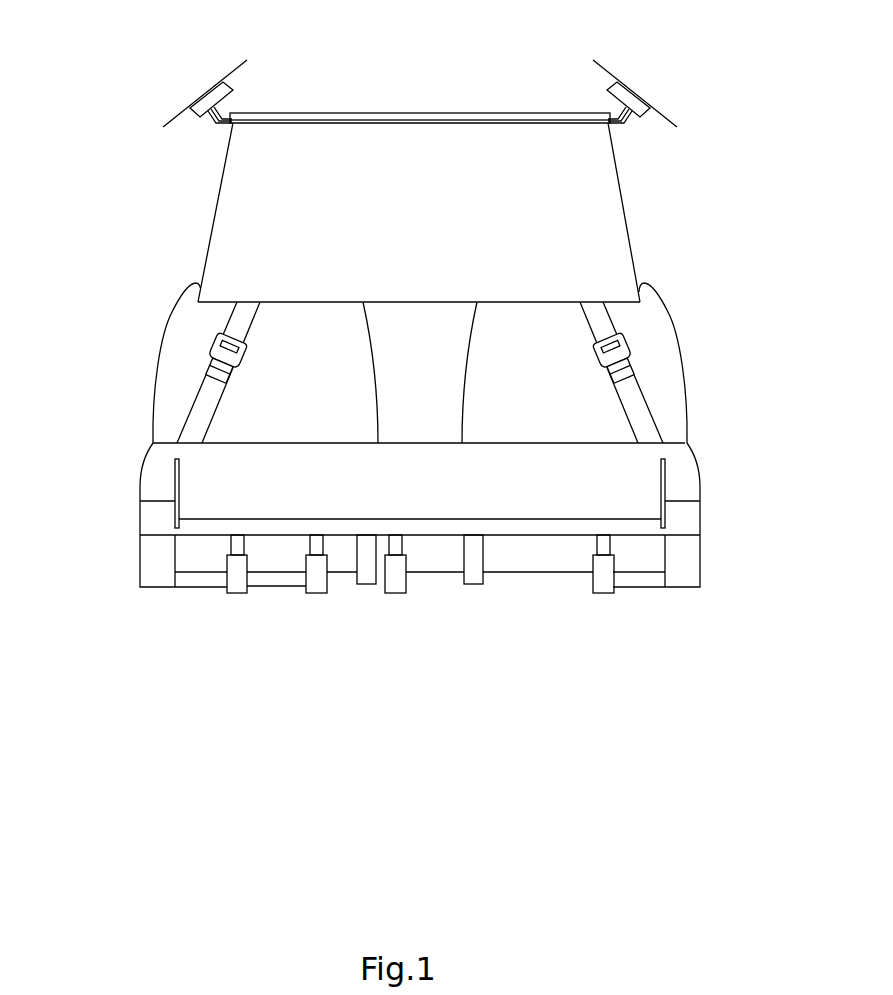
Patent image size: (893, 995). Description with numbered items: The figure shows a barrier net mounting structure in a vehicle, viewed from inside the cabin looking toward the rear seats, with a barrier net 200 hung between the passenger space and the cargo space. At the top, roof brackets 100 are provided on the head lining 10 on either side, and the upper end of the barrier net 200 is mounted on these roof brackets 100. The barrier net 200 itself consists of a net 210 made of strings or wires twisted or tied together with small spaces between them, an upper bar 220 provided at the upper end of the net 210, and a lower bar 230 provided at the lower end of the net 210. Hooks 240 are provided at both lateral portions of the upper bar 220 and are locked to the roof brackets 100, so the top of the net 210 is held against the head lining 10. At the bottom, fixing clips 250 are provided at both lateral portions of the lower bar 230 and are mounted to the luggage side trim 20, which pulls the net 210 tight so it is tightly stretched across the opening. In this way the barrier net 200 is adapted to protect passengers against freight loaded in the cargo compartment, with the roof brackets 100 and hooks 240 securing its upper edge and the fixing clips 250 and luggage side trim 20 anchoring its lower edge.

The head lining 10 is at (237, 67).
The luggage side trim 20 is at (147, 467).
The roof bracket 100 is at (255, 88).
The barrier net 200 is at (371, 182).
The net 210 is at (233, 218).
The upper bar 220 is at (393, 112).
The lower bar 230 is at (217, 312).
The hook 240 is at (218, 123).
The fixing clip 250 is at (210, 378).